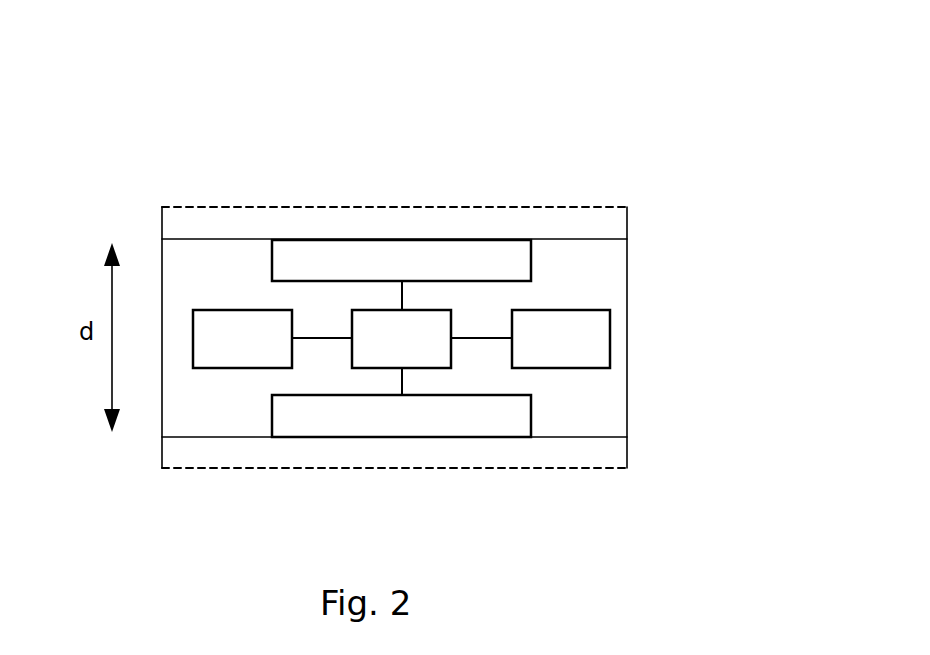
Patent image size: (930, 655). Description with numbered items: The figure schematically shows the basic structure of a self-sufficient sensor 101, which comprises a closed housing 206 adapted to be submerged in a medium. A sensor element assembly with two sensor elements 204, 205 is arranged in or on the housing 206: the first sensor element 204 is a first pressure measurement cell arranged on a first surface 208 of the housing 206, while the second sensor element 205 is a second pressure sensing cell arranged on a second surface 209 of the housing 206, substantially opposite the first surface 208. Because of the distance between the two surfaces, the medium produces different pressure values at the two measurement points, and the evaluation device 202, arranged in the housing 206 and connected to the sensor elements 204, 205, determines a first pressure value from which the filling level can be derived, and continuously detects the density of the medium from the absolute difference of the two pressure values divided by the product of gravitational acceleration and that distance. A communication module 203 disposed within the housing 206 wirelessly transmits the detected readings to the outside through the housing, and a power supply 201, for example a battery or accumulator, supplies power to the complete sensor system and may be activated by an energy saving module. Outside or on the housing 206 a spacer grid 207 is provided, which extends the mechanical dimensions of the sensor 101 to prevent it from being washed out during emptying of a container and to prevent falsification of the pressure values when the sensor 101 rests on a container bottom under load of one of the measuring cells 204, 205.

The self-sufficient sensor 101 is at (568, 103).
The power supply 201 is at (211, 310).
The evaluation device 202 is at (433, 310).
The communication module 203 is at (610, 341).
The first sensor element 204 is at (330, 250).
The second sensor element 205 is at (410, 425).
The housing 206 is at (627, 397).
The spacer grid 207 is at (595, 207).
The first surface 208 is at (236, 239).
The second surface 209 is at (193, 437).